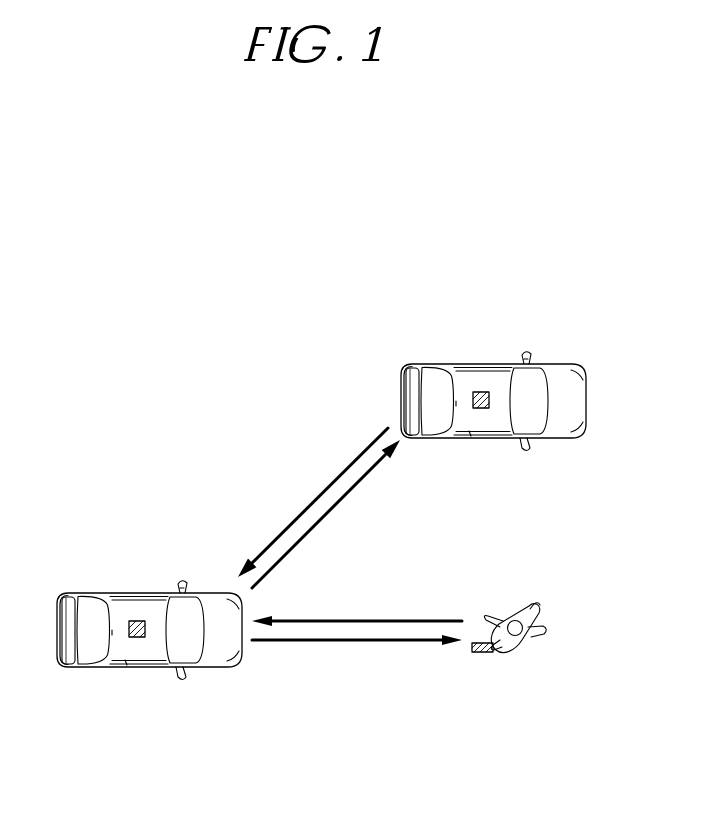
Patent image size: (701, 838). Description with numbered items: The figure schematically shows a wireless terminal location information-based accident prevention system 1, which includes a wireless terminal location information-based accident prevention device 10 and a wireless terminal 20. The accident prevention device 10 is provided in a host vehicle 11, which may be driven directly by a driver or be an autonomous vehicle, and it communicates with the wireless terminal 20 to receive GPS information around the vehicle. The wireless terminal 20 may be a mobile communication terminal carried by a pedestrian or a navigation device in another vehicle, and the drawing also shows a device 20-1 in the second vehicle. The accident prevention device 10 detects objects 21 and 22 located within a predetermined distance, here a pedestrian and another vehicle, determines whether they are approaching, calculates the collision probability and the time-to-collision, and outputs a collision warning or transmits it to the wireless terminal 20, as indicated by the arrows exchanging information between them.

The wireless terminal location information-based accident prevention system 1 is at (89, 277).
The wireless terminal location information-based accident prevention device 10 is at (133, 620).
The host vehicle 11 is at (75, 591).
The wireless terminal 20 is at (481, 654).
The communication device of second vehicle 20-1 is at (477, 391).
The object 21 is at (540, 634).
The object 22 is at (420, 362).